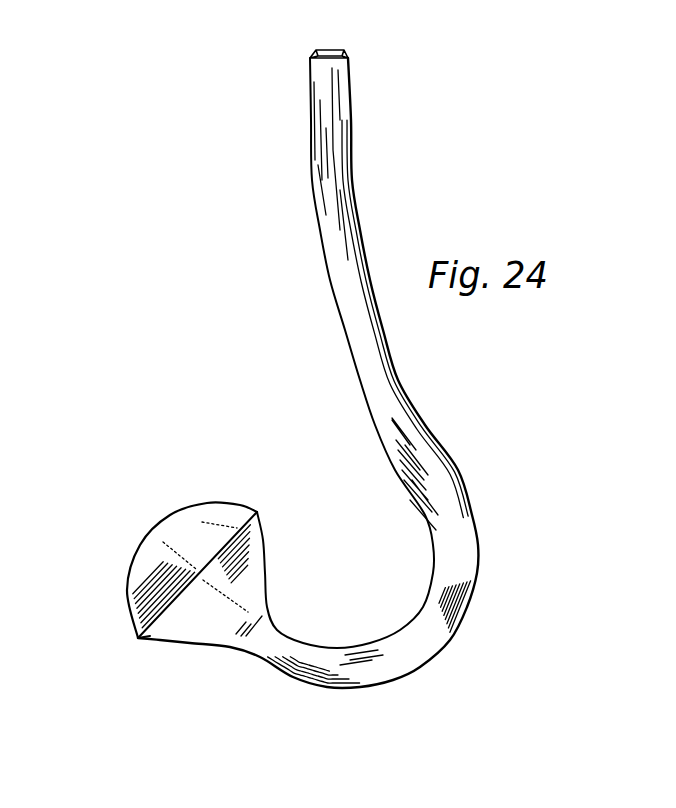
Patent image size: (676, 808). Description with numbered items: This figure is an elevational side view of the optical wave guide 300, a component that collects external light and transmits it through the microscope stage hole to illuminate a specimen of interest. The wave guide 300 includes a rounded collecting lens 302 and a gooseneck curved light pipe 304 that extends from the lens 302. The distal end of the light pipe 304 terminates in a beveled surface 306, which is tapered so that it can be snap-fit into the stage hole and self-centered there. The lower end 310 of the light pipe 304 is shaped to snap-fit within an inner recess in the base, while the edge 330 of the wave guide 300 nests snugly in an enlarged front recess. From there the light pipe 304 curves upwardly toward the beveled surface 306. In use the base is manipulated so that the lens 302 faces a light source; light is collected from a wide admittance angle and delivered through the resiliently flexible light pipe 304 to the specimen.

The optical wave guide 300 is at (272, 382).
The rounded collecting lens 302 is at (222, 502).
The gooseneck curved light pipe 304 is at (383, 330).
The beveled surface 306 is at (343, 56).
The lower end 310 is at (350, 690).
The edge 330 is at (137, 642).